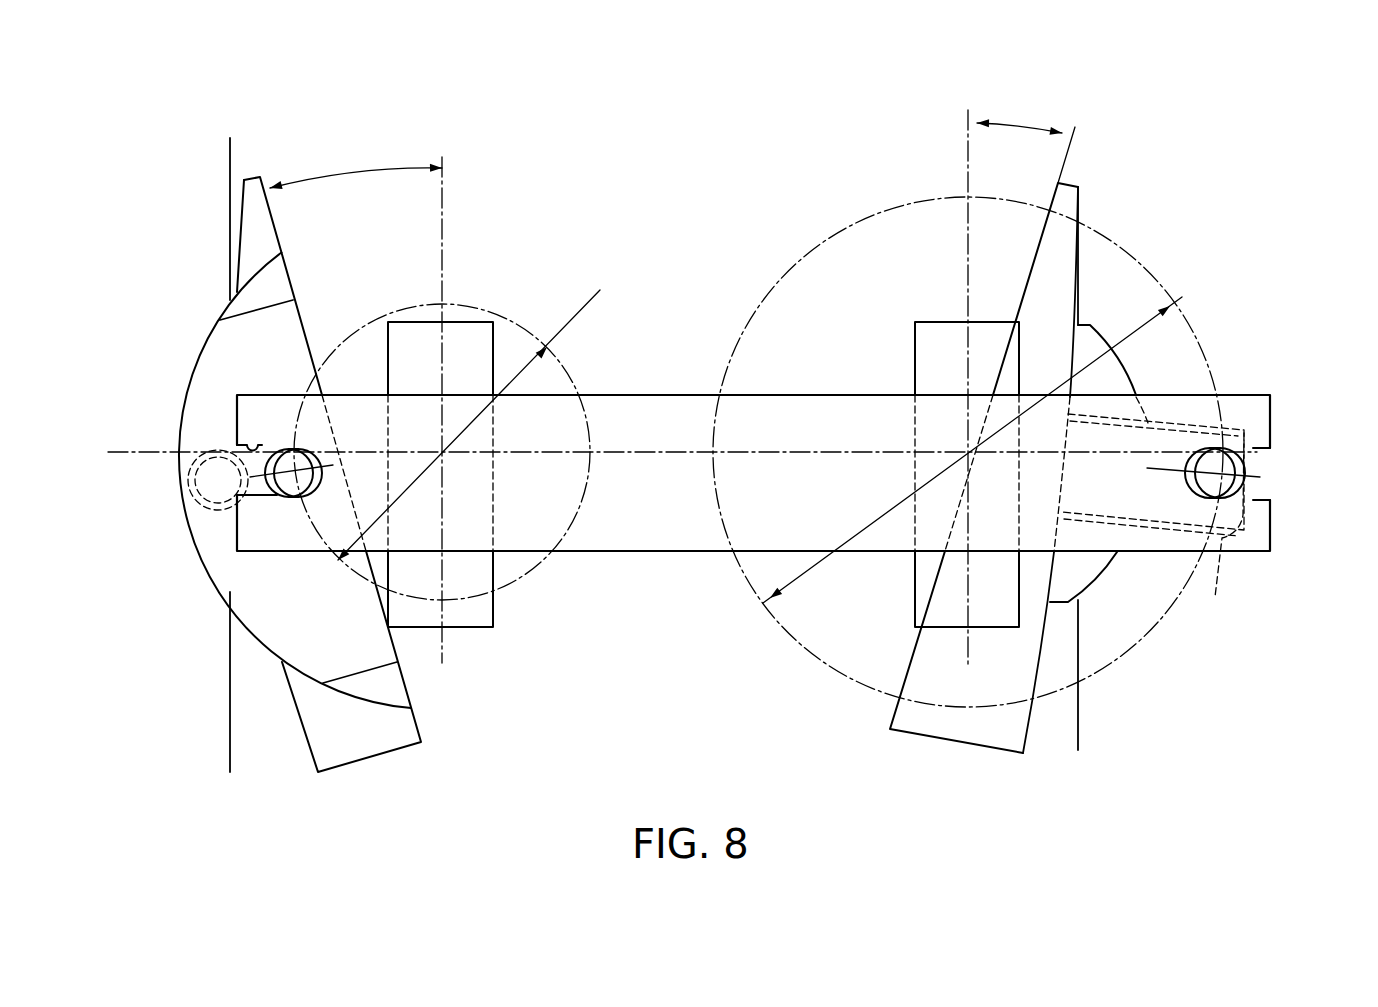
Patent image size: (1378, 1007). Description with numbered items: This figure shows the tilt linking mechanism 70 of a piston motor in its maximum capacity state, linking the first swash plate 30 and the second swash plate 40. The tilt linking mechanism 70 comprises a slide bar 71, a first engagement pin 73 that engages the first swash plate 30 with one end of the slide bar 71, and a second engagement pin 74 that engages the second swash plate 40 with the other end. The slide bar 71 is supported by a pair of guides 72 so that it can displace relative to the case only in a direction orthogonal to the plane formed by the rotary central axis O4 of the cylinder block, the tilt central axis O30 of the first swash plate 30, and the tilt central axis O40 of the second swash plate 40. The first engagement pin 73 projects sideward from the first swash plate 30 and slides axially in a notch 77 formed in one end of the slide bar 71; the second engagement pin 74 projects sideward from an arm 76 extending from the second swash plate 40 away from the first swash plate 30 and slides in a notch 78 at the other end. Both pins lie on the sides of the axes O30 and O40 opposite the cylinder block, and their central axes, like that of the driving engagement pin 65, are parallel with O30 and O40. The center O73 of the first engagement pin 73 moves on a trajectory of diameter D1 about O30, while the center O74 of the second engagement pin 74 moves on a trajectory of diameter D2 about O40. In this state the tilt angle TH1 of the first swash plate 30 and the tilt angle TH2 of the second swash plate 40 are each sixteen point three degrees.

The first swash plate 30 is at (413, 752).
The second swash plate 40 is at (885, 736).
The driving engagement pin 65 is at (192, 503).
The tilt linking mechanism 70 is at (1265, 380).
The slide bar 71 is at (605, 394).
The guides 72 is at (472, 628).
The first engagement pin 73 is at (280, 487).
The second engagement pin 74 is at (1232, 483).
The arm 76 is at (1153, 520).
The notch 77 is at (235, 449).
The notch 78 is at (1262, 450).
The rotary central axis O4 is at (648, 456).
The tilt central axis O30 is at (442, 452).
The tilt central axis O40 is at (968, 452).
The center of first engagement pin O73 is at (228, 340).
The center of second engagement pin O74 is at (1220, 473).
The diameter of displacement trajectory D1 is at (447, 442).
The diameter of displacement trajectory D2 is at (968, 452).
The tilt angle TH1 is at (356, 169).
The tilt angle TH2 is at (1019, 116).